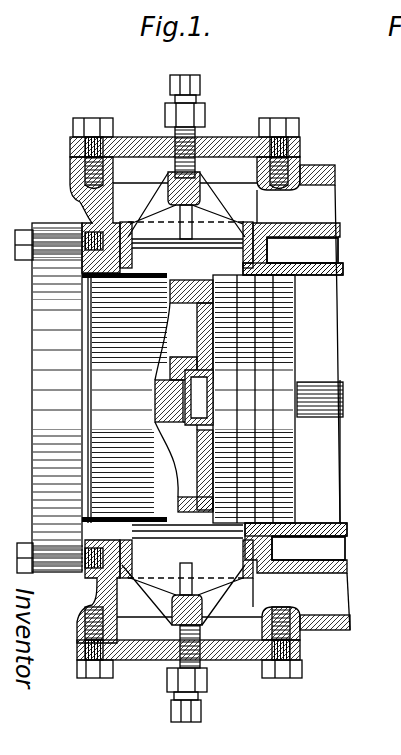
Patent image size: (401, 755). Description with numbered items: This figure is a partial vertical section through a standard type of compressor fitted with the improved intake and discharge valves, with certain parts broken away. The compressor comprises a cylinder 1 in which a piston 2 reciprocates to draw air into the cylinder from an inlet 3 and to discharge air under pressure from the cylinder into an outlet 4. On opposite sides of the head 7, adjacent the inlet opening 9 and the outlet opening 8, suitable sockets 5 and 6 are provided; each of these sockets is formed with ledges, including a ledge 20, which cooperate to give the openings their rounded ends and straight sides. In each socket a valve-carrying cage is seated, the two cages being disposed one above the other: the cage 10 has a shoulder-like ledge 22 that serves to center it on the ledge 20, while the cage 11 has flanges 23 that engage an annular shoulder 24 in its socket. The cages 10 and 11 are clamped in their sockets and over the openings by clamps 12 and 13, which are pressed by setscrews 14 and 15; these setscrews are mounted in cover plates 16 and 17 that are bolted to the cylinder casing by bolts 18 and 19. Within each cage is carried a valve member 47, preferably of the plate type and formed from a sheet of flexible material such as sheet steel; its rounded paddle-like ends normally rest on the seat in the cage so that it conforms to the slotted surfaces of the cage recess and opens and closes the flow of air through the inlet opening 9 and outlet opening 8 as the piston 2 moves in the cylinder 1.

The cylinder 1 is at (343, 537).
The piston 2 is at (297, 452).
The inlet 3 is at (340, 592).
The outlet 4 is at (334, 197).
The socket 5 is at (300, 245).
The socket 6 is at (270, 546).
The head 7 is at (197, 348).
The outlet opening 8 is at (302, 251).
The inlet opening 9 is at (182, 527).
The cage 10 is at (240, 248).
The cage 11 is at (137, 539).
The clamp 12 is at (223, 203).
The clamp 13 is at (153, 599).
The setscrew 14 is at (198, 80).
The setscrew 15 is at (200, 716).
The cover plate 16 is at (222, 136).
The cover plate 17 is at (153, 663).
The bolt 18 is at (93, 118).
The bolt 19 is at (96, 680).
The ledge 20 is at (100, 224).
The shoulder-like ledge 22 is at (287, 276).
The flange 23 is at (298, 552).
The annular shoulder 24 is at (90, 580).
The valve member 47 is at (200, 552).